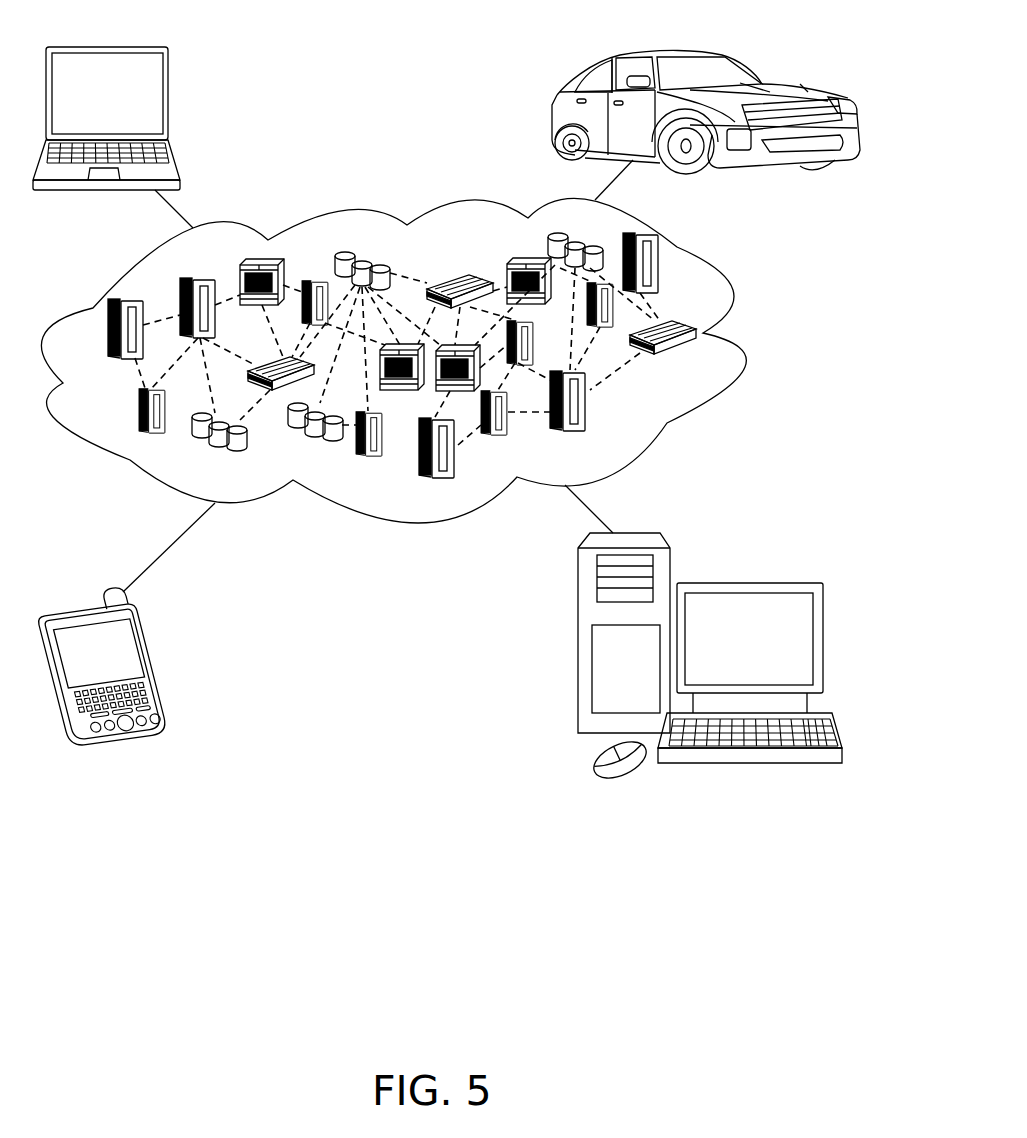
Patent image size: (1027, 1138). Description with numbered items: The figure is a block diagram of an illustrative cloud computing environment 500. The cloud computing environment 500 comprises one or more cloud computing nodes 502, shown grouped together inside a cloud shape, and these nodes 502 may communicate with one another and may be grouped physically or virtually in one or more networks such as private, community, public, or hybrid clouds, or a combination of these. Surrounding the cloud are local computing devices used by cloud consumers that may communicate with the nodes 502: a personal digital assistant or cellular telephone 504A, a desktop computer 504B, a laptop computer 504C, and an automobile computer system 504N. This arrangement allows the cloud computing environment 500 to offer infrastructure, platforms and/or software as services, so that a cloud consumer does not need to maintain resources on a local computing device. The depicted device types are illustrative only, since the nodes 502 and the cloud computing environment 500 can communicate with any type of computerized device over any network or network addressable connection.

The cloud computing environment 500 is at (422, 360).
The cloud computing nodes 502 is at (696, 362).
The personal digital assistant or cellular telephone 504A is at (150, 636).
The desktop computer 504B is at (736, 583).
The laptop computer 504C is at (167, 80).
The automobile computer system 504N is at (553, 116).